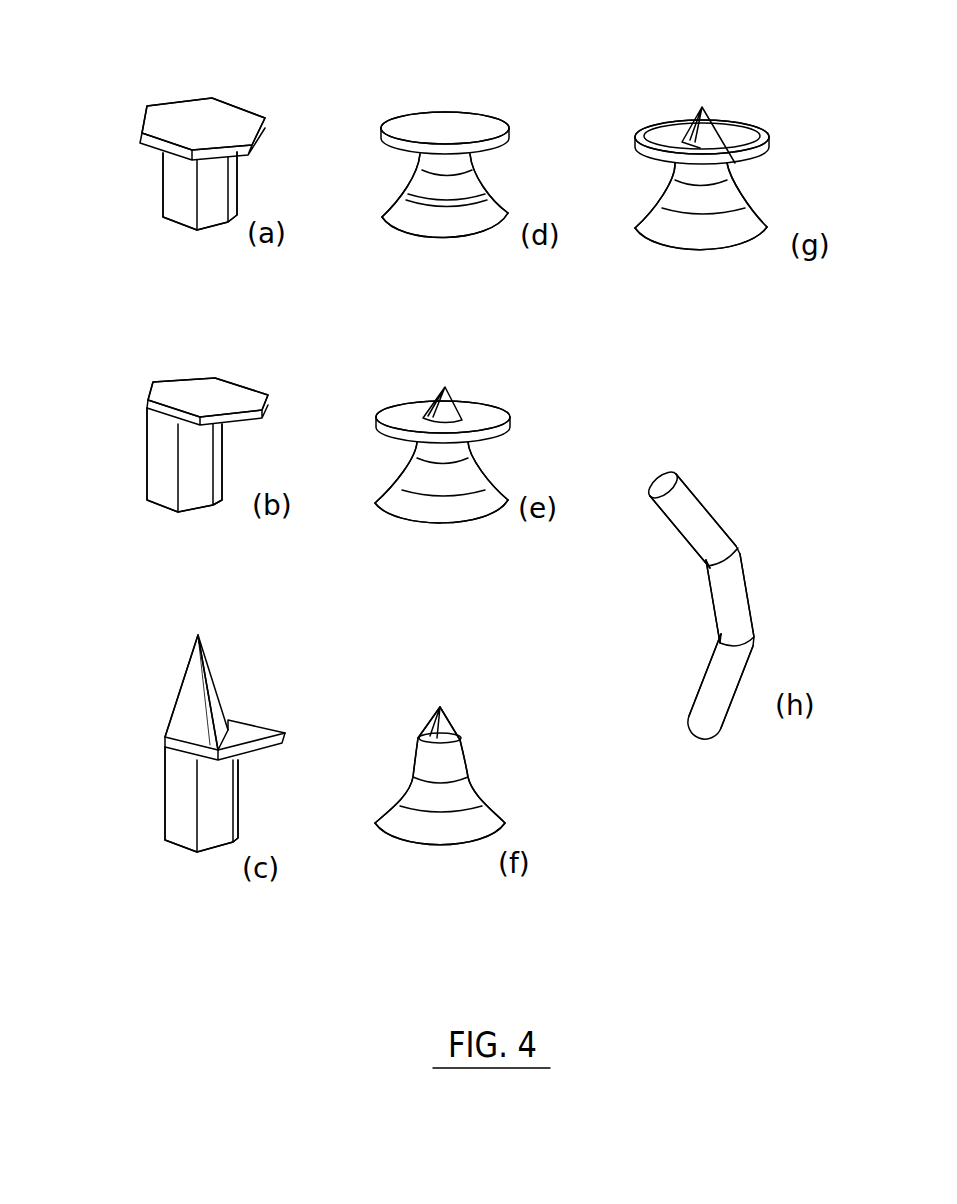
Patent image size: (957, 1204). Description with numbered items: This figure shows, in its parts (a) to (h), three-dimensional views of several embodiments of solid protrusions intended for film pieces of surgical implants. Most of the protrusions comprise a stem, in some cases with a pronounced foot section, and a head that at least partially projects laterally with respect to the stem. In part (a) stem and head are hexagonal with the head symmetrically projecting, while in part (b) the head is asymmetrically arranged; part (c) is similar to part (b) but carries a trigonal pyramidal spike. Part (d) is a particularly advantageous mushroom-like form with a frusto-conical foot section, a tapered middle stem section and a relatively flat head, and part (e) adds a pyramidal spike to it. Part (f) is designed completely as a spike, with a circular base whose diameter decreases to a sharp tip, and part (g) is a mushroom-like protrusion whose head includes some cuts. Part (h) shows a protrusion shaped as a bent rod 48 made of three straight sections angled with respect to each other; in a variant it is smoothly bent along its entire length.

The bent rod 48 is at (752, 612).